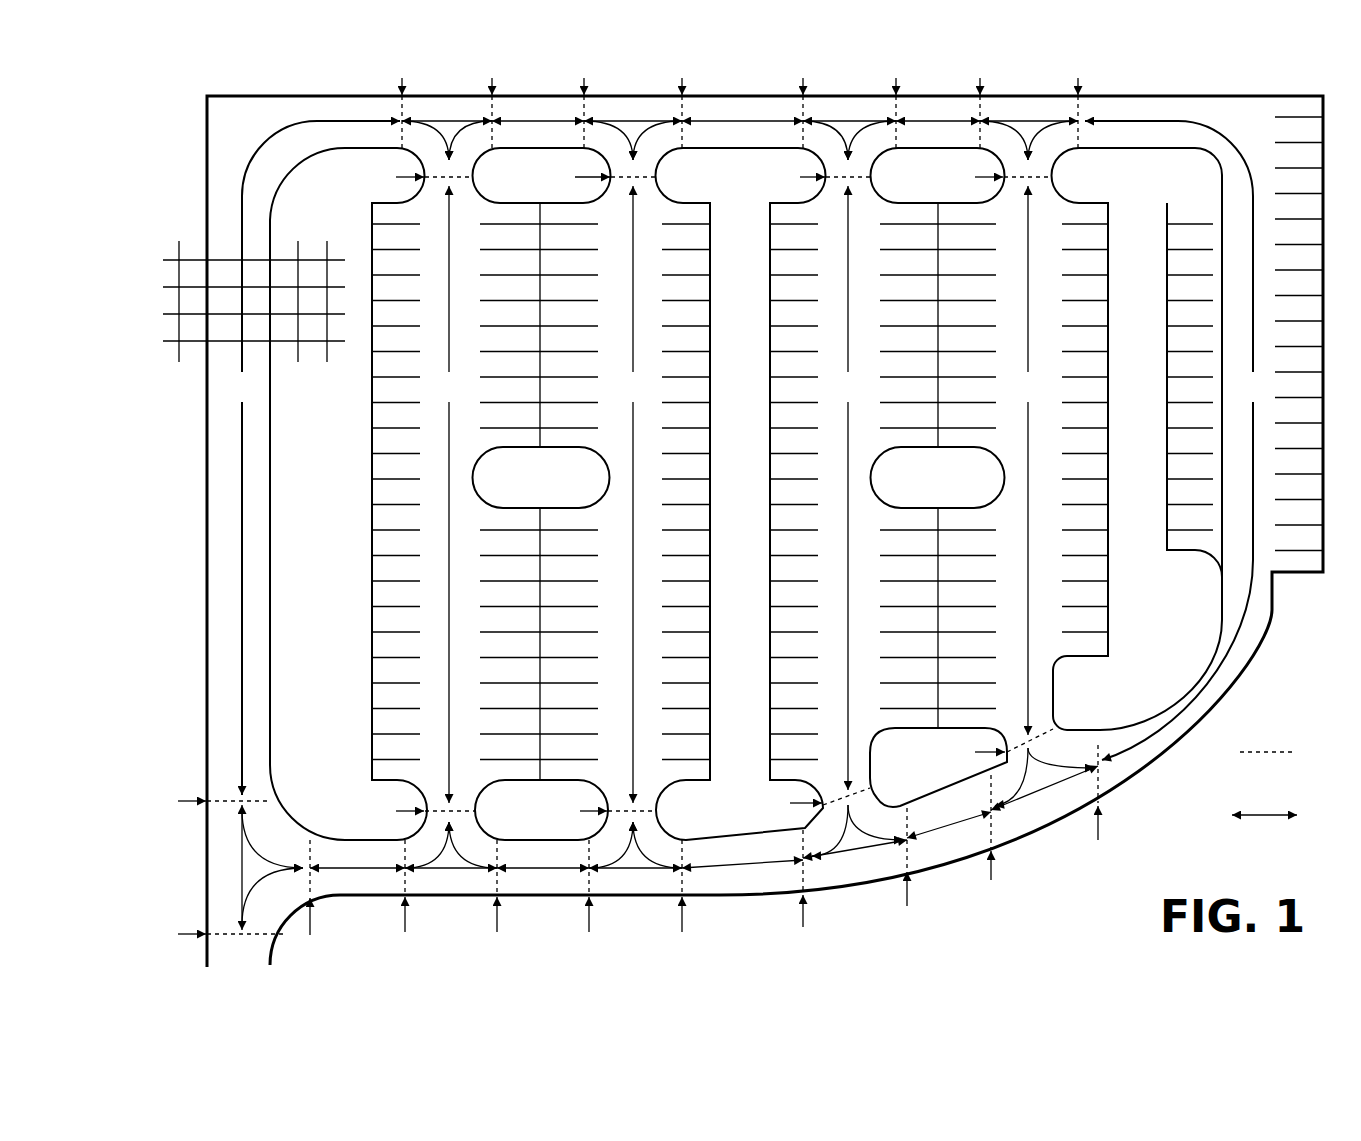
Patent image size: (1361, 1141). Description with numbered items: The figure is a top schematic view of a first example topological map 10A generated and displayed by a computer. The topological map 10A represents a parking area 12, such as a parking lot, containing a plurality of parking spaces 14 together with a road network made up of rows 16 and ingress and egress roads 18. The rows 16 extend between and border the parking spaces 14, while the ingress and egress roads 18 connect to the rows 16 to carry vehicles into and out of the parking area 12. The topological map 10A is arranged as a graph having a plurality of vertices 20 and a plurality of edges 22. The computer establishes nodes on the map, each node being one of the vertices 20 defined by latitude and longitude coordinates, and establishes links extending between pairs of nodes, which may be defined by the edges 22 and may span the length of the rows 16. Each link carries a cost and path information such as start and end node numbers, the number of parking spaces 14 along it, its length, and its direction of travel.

The topological map 10A is at (1228, 84).
The parking area 12 is at (226, 162).
The parking spaces 14 is at (847, 438).
The rows 16 is at (834, 494).
The ingress and egress roads 18 is at (740, 458).
The vertices 20 is at (179, 309).
The edges 22 is at (179, 355).